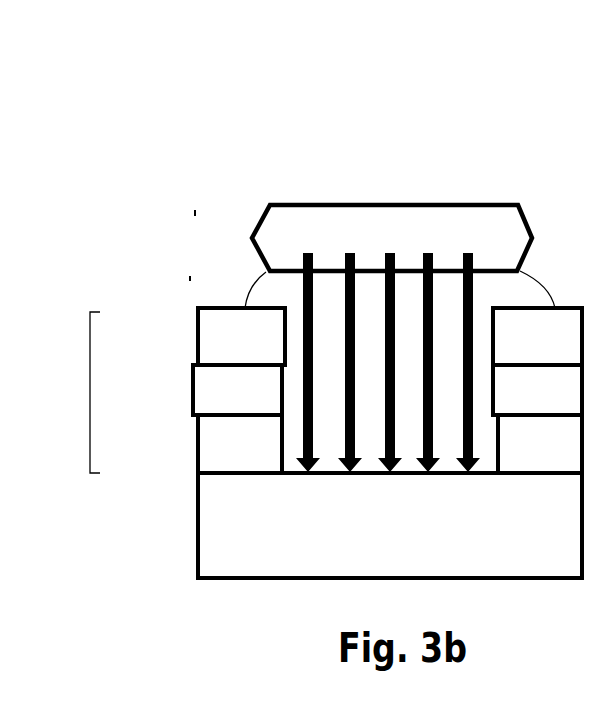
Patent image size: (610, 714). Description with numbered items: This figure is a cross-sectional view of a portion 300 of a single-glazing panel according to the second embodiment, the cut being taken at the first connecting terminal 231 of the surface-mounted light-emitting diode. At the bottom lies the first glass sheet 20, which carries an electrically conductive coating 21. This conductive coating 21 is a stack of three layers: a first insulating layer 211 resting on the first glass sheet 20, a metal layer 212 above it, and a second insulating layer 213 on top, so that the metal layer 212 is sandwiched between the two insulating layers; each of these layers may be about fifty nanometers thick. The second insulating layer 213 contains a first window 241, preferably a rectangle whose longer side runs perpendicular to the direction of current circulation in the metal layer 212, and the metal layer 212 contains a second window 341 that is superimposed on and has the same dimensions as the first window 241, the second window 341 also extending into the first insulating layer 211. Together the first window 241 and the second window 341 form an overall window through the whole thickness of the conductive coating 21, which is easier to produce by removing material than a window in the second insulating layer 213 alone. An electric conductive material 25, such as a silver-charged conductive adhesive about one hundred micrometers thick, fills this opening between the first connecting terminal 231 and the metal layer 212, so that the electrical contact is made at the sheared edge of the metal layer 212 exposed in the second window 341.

The portion of the panel 300 is at (117, 250).
The first connecting terminal 231 is at (262, 218).
The electric conductive material 25 is at (252, 283).
The electrically conductive coating 21 is at (90, 393).
The second insulating layer 213 is at (198, 337).
The metal layer 212 is at (193, 399).
The first insulating layer 211 is at (198, 452).
The first glass sheet 20 is at (198, 558).
The first window 241 is at (368, 340).
The second window 341 is at (445, 388).